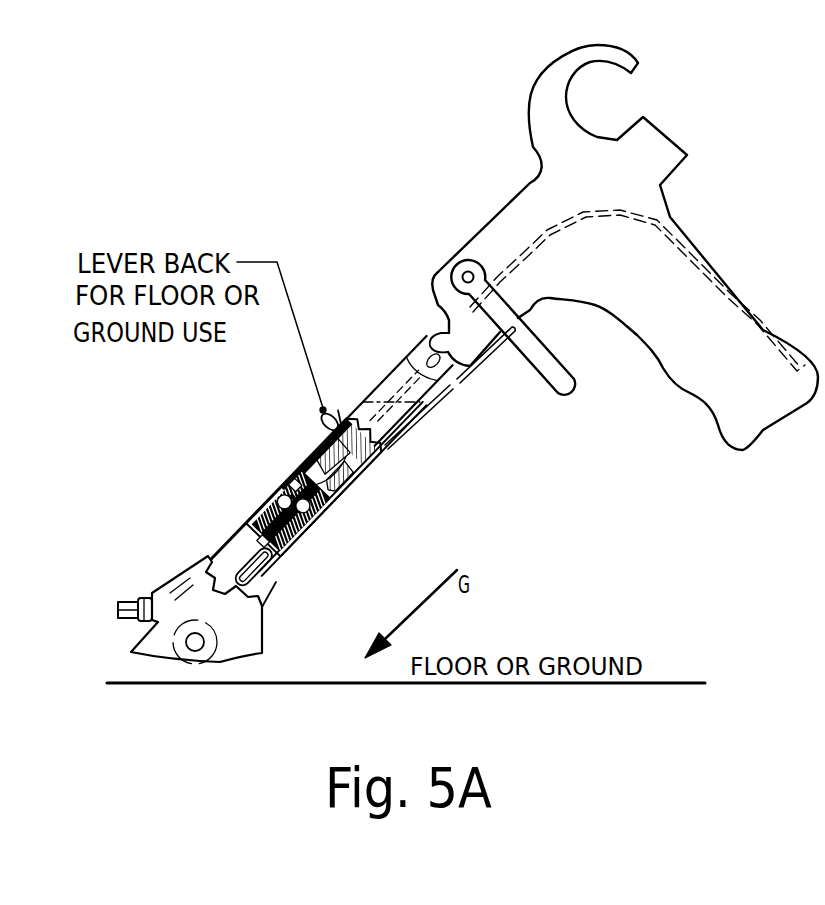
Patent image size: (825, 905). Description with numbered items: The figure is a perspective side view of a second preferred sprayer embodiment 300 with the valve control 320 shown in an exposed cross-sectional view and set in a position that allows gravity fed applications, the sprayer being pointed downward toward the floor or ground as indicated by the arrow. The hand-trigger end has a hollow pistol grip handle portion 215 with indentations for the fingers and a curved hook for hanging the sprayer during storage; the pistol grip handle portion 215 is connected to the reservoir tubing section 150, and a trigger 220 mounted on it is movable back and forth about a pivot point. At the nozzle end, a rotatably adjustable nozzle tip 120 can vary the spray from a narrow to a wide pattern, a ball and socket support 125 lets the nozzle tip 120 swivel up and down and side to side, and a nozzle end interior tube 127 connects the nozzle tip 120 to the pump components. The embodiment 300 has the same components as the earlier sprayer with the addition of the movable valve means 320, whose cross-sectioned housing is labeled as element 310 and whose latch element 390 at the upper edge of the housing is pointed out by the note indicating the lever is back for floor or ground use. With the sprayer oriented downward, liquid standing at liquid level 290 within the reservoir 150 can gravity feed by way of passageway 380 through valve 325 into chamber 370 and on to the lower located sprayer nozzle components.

The nozzle tip 120 is at (122, 603).
The ball and socket support 125 is at (142, 597).
The nozzle end interior tube 127 is at (210, 555).
The reservoir tubing section 150 is at (390, 432).
The pistol grip handle portion 215 is at (728, 330).
The trigger 220 is at (572, 392).
The liquid level 290 is at (425, 427).
The second preferred sprayer embodiment 300 is at (344, 394).
The valve housing 310 is at (303, 463).
The valve control 320 is at (310, 507).
The valve 325 is at (333, 487).
The chamber 370 is at (307, 523).
The passageway 380 is at (335, 462).
The latch 390 is at (330, 417).